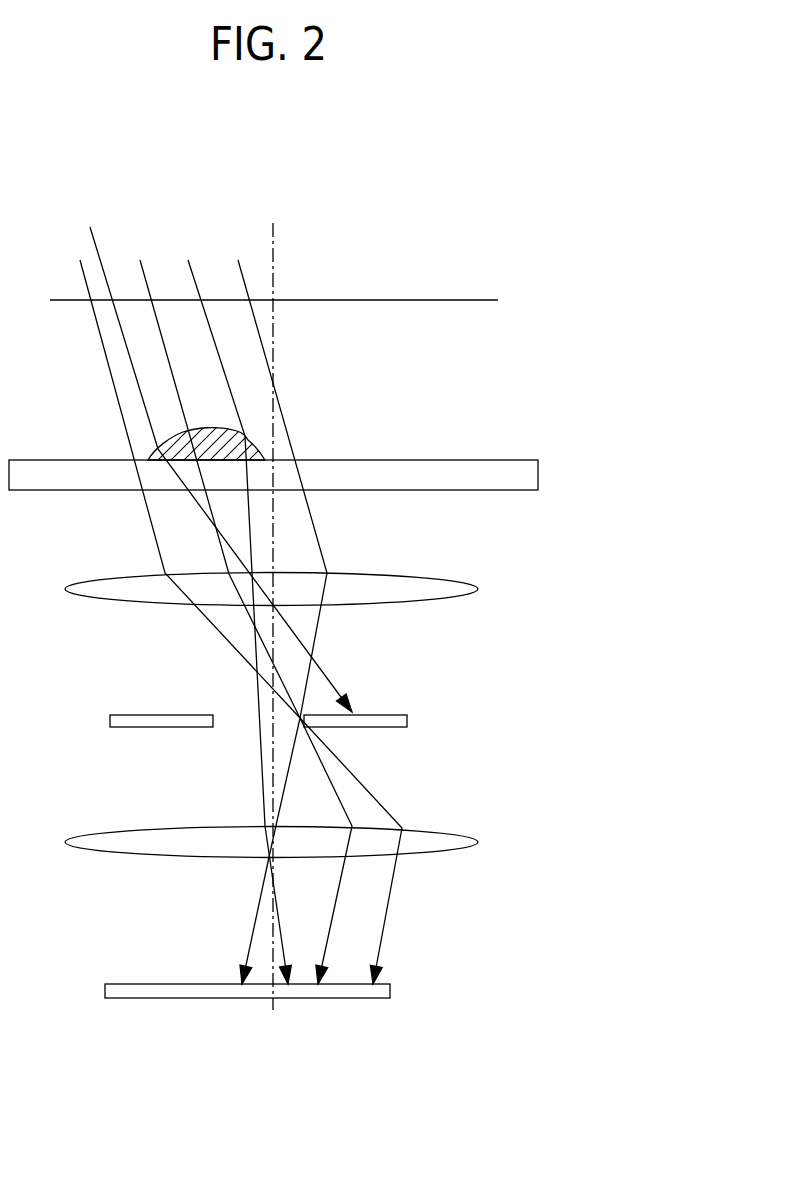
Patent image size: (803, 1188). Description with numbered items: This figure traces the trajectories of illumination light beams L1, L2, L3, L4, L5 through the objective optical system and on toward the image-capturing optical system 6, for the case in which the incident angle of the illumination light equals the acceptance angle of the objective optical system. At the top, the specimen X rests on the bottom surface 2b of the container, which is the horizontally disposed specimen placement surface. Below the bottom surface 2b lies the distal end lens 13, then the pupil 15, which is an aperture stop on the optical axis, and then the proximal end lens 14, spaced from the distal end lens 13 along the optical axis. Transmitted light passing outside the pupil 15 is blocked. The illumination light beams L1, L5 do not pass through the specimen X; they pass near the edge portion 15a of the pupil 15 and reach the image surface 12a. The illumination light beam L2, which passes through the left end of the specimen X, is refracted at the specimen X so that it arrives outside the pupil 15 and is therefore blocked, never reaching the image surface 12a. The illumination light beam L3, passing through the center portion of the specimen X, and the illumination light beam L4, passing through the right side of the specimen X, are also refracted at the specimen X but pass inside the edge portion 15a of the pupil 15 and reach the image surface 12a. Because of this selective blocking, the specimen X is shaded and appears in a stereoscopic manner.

The image-capturing optical system 6 is at (602, 632).
The bottom surface 2b is at (400, 460).
The specimen X is at (200, 427).
The distal end lens 13 is at (478, 588).
The proximal end lens 14 is at (478, 842).
The pupil 15 is at (383, 715).
The edge portion 15a is at (210, 715).
The image surface 12a is at (130, 984).
The illumination light beam L1 is at (232, 608).
The illumination light beam L2 is at (212, 453).
The illumination light beam L3 is at (237, 608).
The illumination light beam L4 is at (232, 608).
The illumination light beam L5 is at (276, 608).